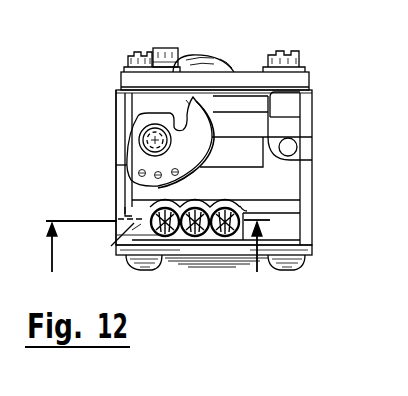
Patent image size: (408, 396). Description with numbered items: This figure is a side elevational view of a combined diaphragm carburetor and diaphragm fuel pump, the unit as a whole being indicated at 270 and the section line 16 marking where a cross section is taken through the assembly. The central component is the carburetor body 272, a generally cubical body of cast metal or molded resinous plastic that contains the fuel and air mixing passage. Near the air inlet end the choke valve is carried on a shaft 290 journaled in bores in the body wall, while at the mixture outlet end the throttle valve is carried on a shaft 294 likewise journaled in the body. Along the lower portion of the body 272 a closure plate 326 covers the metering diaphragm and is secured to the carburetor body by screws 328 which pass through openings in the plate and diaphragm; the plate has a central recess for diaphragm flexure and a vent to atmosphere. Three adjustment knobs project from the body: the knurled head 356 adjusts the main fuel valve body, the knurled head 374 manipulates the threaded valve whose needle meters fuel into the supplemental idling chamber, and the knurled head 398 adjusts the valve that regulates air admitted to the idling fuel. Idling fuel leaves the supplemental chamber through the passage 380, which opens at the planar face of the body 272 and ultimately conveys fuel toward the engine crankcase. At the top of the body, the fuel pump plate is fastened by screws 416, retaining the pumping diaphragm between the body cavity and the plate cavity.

The section line 16- 16 is at (155, 264).
The cartridge assembly 270 is at (324, 68).
The carburetor body 272 is at (117, 100).
The shaft 290 is at (295, 146).
The shaft 294 is at (150, 135).
The closure plate 326 is at (198, 264).
The screws 328 is at (138, 270).
The knurled head 356 is at (247, 210).
The knurled head 374 is at (211, 203).
The passage 380 is at (116, 240).
The knurled head 398 is at (124, 216).
The screws 416 is at (127, 55).